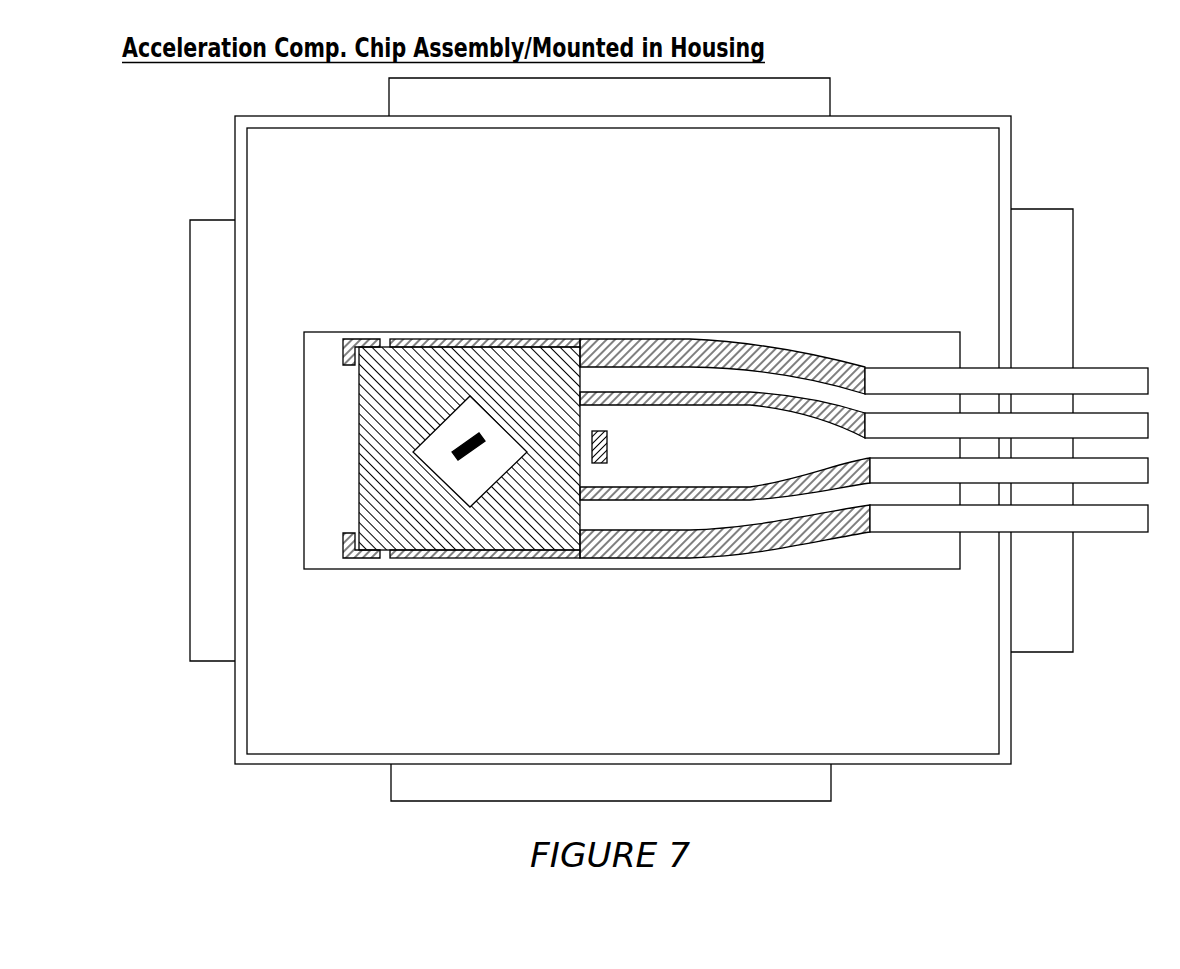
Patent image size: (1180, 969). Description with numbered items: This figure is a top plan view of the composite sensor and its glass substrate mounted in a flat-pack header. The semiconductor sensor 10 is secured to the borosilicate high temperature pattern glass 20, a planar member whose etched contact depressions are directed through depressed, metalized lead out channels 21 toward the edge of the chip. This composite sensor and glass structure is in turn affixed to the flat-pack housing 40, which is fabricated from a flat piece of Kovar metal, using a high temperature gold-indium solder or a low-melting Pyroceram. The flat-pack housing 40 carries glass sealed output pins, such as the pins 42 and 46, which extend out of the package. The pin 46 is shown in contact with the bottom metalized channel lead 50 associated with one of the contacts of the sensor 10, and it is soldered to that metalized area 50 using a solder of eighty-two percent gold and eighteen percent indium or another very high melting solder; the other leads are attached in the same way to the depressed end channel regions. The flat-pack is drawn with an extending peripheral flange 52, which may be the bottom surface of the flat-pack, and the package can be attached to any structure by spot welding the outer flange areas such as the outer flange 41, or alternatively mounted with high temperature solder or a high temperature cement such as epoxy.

The sensor 10 is at (393, 350).
The high temperature pattern glass 20 is at (803, 348).
The lead out channels 21 is at (625, 347).
The flat-pack housing 40 is at (1000, 123).
The outer flange area 41 is at (834, 75).
The output pin 42 is at (1108, 378).
The output pin 46 is at (1098, 522).
The metalized channel lead 50 is at (740, 548).
The peripheral flange 52 is at (402, 789).